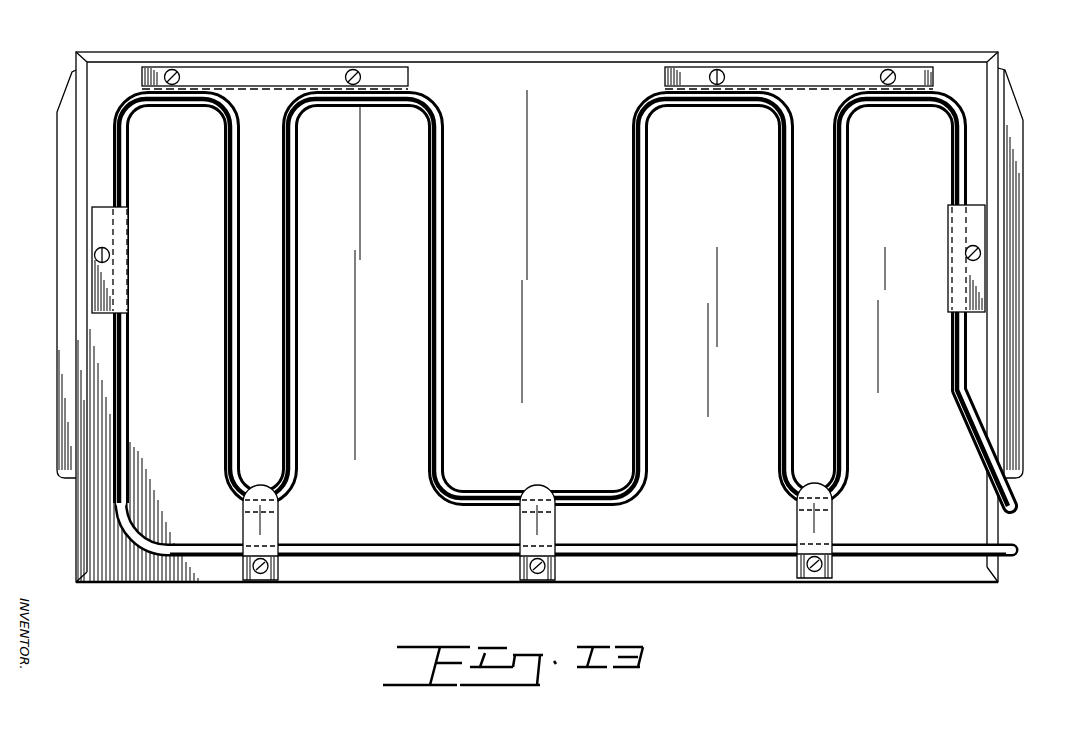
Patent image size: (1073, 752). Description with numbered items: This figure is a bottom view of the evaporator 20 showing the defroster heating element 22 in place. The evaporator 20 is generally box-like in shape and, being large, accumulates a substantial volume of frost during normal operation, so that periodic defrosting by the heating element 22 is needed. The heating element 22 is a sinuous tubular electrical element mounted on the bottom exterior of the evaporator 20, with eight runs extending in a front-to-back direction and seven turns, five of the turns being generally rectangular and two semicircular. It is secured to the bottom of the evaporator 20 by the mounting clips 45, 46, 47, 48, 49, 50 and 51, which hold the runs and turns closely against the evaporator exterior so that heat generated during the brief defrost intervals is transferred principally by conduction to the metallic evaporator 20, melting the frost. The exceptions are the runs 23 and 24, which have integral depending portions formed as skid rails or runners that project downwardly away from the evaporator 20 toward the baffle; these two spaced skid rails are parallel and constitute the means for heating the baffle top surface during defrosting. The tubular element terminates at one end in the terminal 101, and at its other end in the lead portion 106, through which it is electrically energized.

The evaporator 20 is at (581, 262).
The defroster heating element 22 is at (455, 324).
The run 23 is at (298, 333).
The run 24 is at (780, 334).
The mounting clip 45 is at (889, 93).
The mounting clip 46 is at (965, 252).
The mounting clip 47 is at (832, 527).
The mounting clip 48 is at (555, 532).
The mounting clip 49 is at (278, 522).
The mounting clip 50 is at (128, 268).
The mounting clip 51 is at (364, 92).
The terminal 101 is at (1015, 506).
The terminal lead 106 is at (1015, 551).